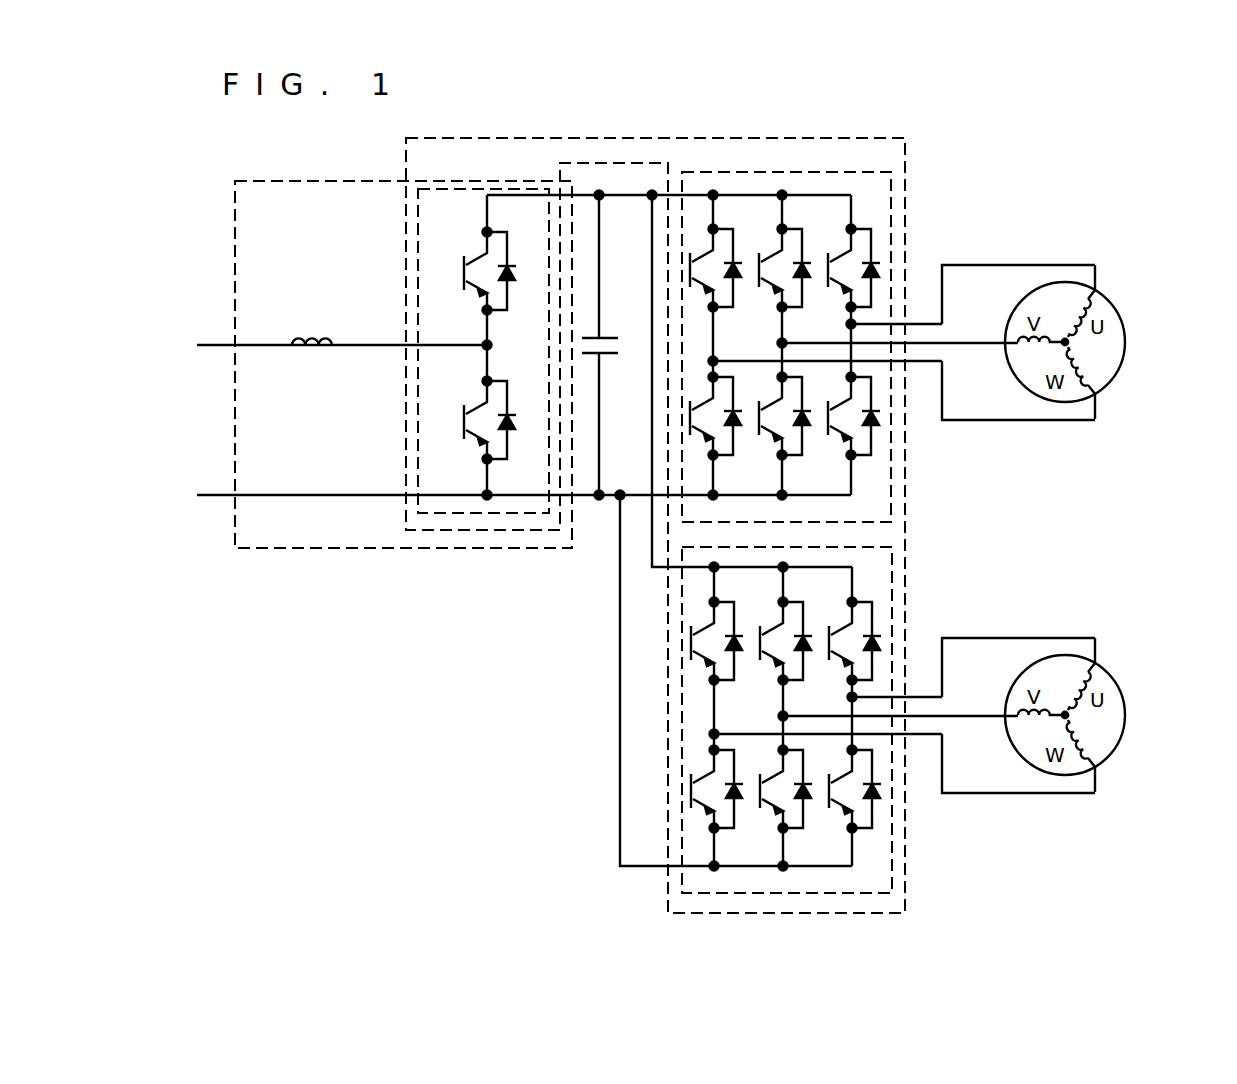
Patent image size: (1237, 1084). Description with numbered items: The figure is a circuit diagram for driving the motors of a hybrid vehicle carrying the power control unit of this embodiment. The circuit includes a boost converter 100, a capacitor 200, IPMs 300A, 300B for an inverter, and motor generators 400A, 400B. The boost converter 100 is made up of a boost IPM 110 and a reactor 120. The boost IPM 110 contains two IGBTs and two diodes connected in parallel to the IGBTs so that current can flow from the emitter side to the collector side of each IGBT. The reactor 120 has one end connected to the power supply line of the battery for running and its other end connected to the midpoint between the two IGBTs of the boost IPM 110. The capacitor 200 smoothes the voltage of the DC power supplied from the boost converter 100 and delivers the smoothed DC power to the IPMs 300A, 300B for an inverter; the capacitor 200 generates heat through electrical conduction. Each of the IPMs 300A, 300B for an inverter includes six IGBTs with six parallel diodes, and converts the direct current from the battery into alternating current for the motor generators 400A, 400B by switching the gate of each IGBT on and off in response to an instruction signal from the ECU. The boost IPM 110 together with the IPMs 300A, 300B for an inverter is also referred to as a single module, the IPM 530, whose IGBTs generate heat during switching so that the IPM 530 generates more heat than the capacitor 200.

The boost converter 100 is at (317, 550).
The boost IPM 110 is at (481, 514).
The reactor 120 is at (307, 355).
The capacitor 200 is at (618, 333).
The IPM for an inverter 300A is at (892, 232).
The IPM for an inverter 300B is at (892, 596).
The motor generator 400A is at (1123, 311).
The motor generator 400B is at (1123, 684).
The IPM 530 is at (815, 136).